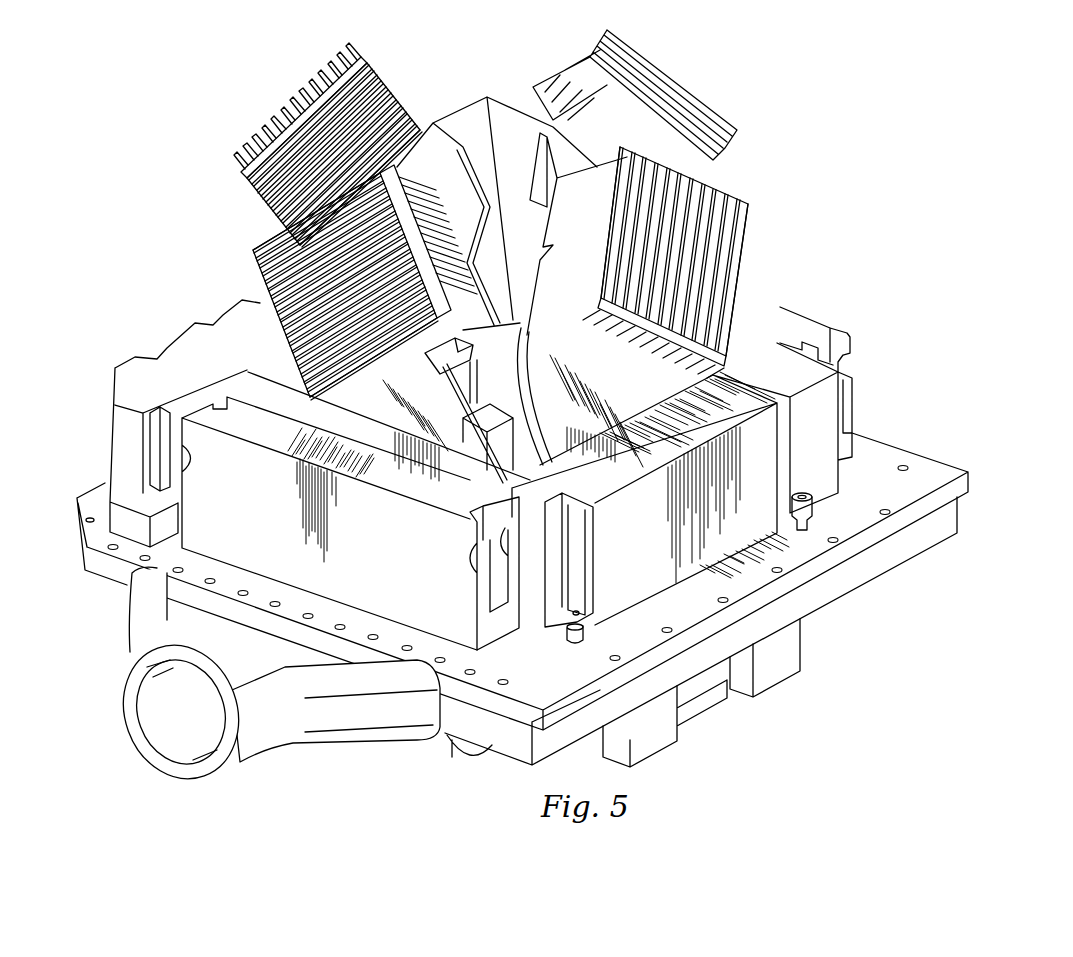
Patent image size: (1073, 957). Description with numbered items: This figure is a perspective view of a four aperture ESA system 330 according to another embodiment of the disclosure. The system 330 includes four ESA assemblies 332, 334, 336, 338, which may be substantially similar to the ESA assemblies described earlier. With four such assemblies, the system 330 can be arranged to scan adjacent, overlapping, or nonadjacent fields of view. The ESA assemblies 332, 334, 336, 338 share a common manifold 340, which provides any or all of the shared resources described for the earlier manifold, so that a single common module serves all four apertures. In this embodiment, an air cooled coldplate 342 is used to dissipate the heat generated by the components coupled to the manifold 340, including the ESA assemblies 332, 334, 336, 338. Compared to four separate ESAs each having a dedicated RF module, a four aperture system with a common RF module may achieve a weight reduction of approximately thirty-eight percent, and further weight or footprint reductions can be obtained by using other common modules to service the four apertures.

The four aperture ESA system 330 is at (567, 412).
The ESA assembly 332 is at (702, 84).
The ESA assembly 334 is at (256, 112).
The ESA assembly 336 is at (244, 262).
The ESA assembly 338 is at (770, 231).
The common manifold 340 is at (727, 721).
The air cooled coldplate 342 is at (515, 748).